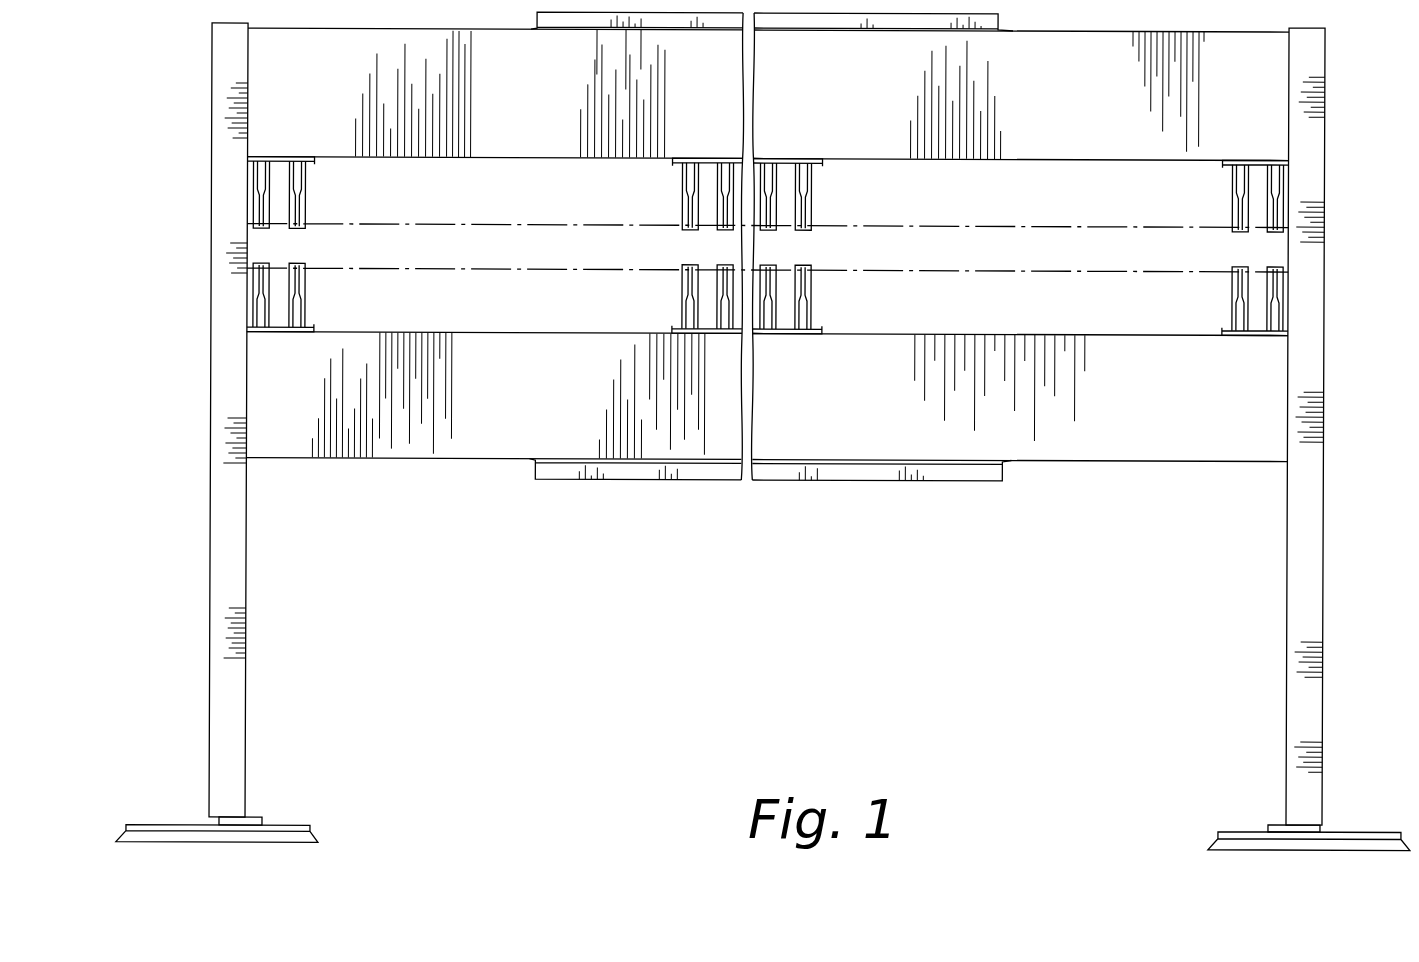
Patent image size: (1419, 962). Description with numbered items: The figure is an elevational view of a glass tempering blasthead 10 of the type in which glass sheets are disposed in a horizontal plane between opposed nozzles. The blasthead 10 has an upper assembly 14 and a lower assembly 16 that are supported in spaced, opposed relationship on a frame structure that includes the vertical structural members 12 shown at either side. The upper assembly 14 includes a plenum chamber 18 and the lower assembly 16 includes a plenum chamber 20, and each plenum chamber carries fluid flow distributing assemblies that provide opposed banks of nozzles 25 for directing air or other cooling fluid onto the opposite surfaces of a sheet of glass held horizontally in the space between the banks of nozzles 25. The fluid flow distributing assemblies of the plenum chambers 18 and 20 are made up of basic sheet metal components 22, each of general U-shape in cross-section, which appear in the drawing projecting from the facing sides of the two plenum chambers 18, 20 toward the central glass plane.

The glass tempering blasthead 10 is at (1058, 512).
The vertical structural members 12 is at (232, 738).
The upper assembly 14 is at (462, 163).
The lower assembly 16 is at (488, 466).
The plenum chamber 18 is at (1073, 127).
The plenum chamber 20 is at (1193, 425).
The sheet metal components 22 is at (772, 345).
The nozzles 25 is at (803, 269).